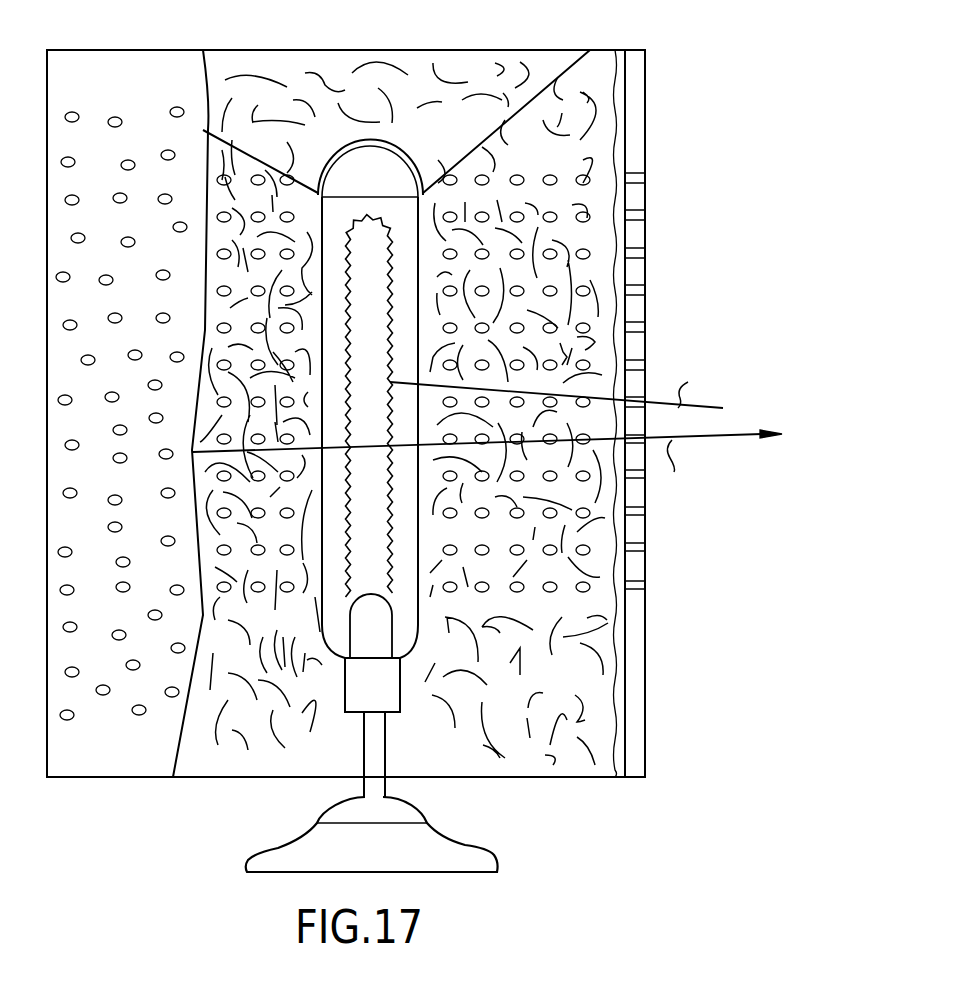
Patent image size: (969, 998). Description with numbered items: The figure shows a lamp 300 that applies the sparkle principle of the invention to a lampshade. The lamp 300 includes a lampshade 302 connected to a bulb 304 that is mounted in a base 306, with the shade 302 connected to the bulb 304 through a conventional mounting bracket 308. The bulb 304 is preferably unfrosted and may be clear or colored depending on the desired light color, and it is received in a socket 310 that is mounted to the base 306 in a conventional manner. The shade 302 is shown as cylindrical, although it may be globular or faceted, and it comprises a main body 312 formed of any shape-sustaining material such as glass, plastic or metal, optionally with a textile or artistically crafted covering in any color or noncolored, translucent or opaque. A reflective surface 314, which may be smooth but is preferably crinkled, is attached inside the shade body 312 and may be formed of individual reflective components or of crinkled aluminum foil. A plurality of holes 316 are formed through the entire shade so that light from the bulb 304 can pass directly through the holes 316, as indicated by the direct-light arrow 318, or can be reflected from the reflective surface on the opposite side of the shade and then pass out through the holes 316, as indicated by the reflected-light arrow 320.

The lamp 300 is at (680, 64).
The lampshade 302 is at (647, 155).
The bulb 304 is at (383, 158).
The base 306 is at (465, 843).
The mounting bracket 308 is at (548, 86).
The socket 310 is at (400, 668).
The main body 312 is at (638, 236).
The reflective surface 314 is at (628, 690).
The holes 316 is at (164, 111).
The arrow 318 is at (718, 408).
The arrow 320 is at (745, 437).